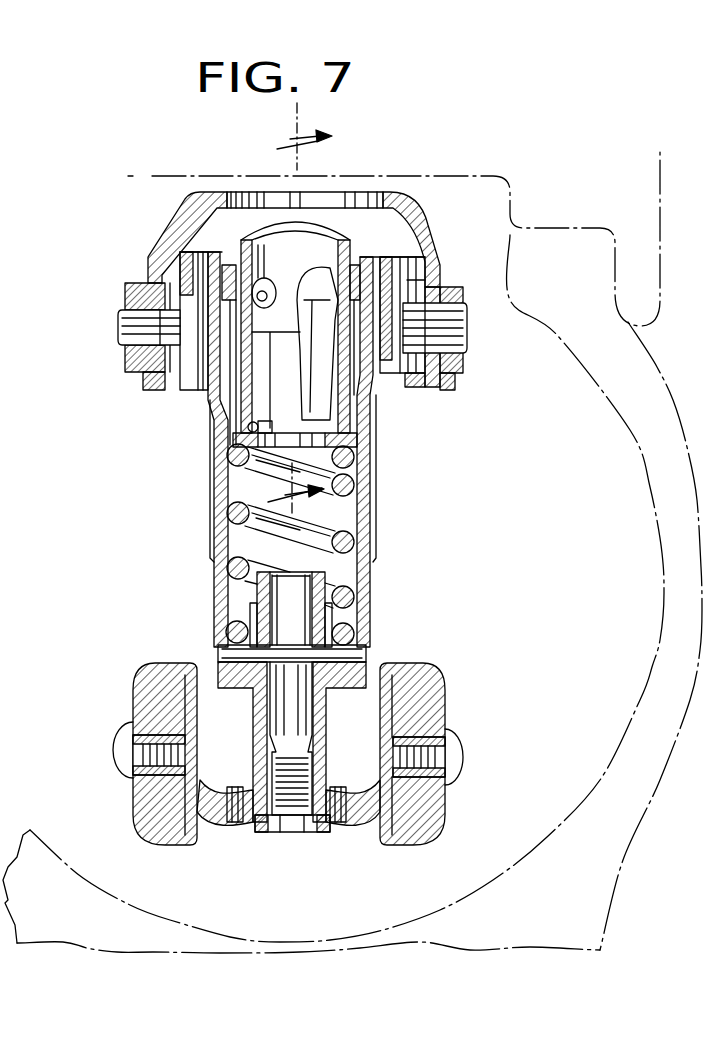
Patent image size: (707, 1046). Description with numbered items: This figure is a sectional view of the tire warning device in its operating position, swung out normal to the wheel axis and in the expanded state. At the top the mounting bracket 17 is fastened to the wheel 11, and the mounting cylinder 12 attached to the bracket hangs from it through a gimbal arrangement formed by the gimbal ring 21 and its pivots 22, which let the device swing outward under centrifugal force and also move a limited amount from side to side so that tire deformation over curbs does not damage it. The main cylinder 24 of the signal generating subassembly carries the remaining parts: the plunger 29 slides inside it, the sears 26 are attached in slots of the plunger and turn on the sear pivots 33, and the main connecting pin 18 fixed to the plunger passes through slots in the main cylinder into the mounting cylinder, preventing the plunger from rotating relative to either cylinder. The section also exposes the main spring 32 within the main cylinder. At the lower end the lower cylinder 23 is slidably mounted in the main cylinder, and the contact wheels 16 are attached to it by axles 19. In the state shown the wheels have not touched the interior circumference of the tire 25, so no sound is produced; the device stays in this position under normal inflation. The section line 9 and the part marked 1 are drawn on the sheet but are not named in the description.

The frame member 1 is at (355, 637).
The section line 9- 9 is at (300, 312).
The wheel 11 is at (398, 176).
The mounting cylinder 12 is at (373, 523).
The contact wheel 16 is at (143, 828).
The mounting bracket 17 is at (420, 235).
The main connecting pin 18 is at (248, 427).
The axle 19 is at (113, 748).
The gimbal ring 21 is at (414, 380).
The pivot 22 is at (467, 330).
The lower cylinder 23 is at (353, 823).
The main cylinder 24 is at (360, 587).
The tire 25 is at (560, 845).
The sear 26 is at (327, 403).
The plunger 29 is at (344, 240).
The main spring 32 is at (358, 635).
The sear pivot 33 is at (265, 283).